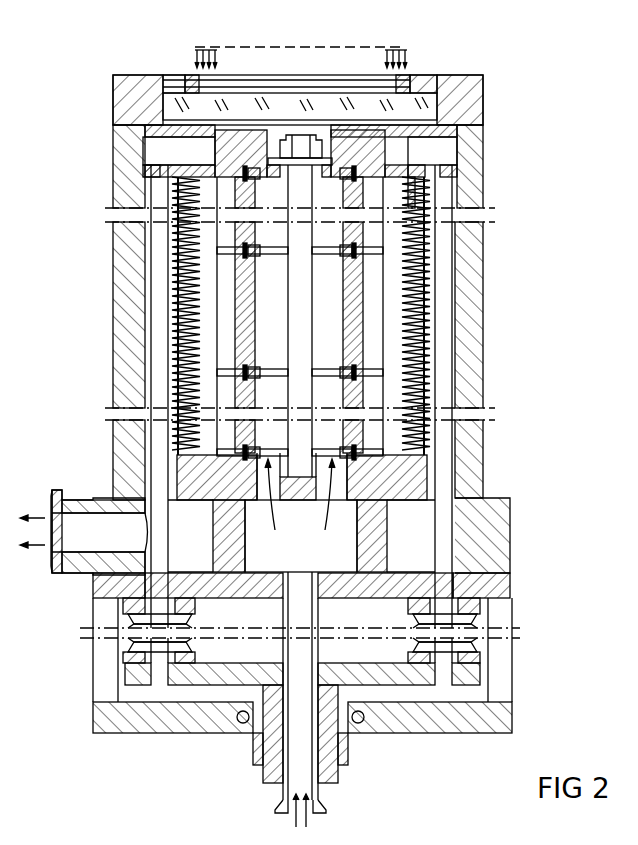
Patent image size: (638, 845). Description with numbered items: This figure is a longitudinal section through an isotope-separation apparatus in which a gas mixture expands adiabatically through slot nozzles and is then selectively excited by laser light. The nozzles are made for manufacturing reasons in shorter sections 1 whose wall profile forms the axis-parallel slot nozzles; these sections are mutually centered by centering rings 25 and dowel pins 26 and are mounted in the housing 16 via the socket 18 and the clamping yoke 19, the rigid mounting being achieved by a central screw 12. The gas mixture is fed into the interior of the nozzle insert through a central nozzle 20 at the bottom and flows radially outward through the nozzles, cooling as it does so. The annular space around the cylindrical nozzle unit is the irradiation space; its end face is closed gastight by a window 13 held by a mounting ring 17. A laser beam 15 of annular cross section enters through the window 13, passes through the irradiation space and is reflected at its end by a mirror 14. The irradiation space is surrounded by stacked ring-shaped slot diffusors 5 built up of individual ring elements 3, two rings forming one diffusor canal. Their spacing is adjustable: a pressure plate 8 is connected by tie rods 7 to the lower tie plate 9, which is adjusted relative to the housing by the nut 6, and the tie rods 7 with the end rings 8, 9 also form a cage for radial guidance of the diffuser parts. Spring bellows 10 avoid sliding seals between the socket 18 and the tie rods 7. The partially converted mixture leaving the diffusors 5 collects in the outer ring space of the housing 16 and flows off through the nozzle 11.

The nozzle wall profile 1 is at (383, 192).
The ring elements 3 is at (425, 258).
The slot diffusors 5 is at (430, 200).
The nut 6 is at (258, 745).
The tie rods 7 is at (150, 312).
The pressure plate 8 is at (430, 160).
The lower tie plate 9 is at (475, 672).
The spring bellows 10 is at (452, 622).
The nozzle 11 is at (54, 558).
The central screw 12 is at (300, 298).
The window 13 is at (252, 98).
The mirror 14 is at (200, 462).
The laser beam 15 is at (350, 56).
The housing 16 is at (125, 182).
The mounting ring 17 is at (465, 95).
The socket 18 is at (105, 583).
The clamping yoke 19 is at (225, 150).
The central nozzle 20 is at (325, 810).
The centering rings 25 is at (262, 178).
The dowel pins 26 is at (328, 178).